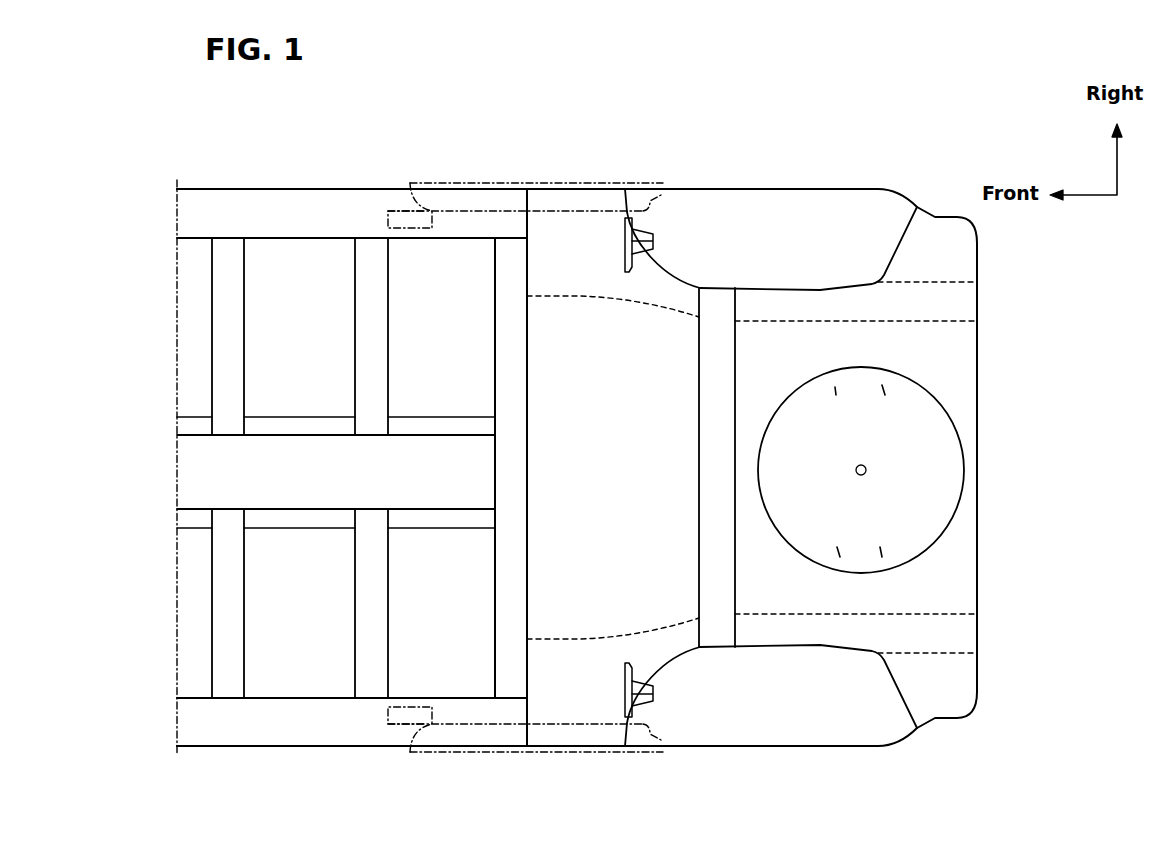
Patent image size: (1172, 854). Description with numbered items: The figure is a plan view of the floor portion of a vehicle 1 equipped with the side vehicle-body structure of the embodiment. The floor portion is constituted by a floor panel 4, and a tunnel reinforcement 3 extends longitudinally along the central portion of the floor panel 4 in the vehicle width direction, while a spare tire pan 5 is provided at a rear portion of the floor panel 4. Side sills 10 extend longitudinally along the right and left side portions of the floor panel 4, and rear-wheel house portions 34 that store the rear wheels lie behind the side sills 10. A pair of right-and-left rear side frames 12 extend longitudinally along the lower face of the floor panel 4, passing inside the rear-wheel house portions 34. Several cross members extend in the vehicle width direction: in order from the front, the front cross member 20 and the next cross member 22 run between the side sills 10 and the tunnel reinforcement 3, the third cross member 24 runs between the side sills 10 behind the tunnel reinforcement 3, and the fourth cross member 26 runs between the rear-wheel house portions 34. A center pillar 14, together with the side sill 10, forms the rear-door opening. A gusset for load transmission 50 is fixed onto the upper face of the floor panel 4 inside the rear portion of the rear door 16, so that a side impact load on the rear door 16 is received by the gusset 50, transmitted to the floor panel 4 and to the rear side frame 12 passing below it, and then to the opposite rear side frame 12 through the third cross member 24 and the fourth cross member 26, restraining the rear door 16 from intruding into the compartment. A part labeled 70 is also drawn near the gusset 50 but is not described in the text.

The vehicle 1 is at (952, 171).
The tunnel reinforcement 3 is at (300, 505).
The floor panel 4 is at (622, 483).
The spare tire pan 5 is at (962, 481).
The side sill 10 is at (268, 189).
The rear side frame 12 is at (578, 299).
The center pillar 14 is at (389, 210).
The rear door 16 is at (636, 183).
The No. 2 cross member 20 is at (244, 298).
The No. 2.5 cross member 22 is at (388, 298).
The No. 3 cross member 24 is at (522, 470).
The No. 4 cross member 26 is at (731, 543).
The rear-wheel house portion 34 is at (779, 288).
The gusset for load transmission 50 is at (623, 252).
The mounting bracket 70 is at (652, 237).